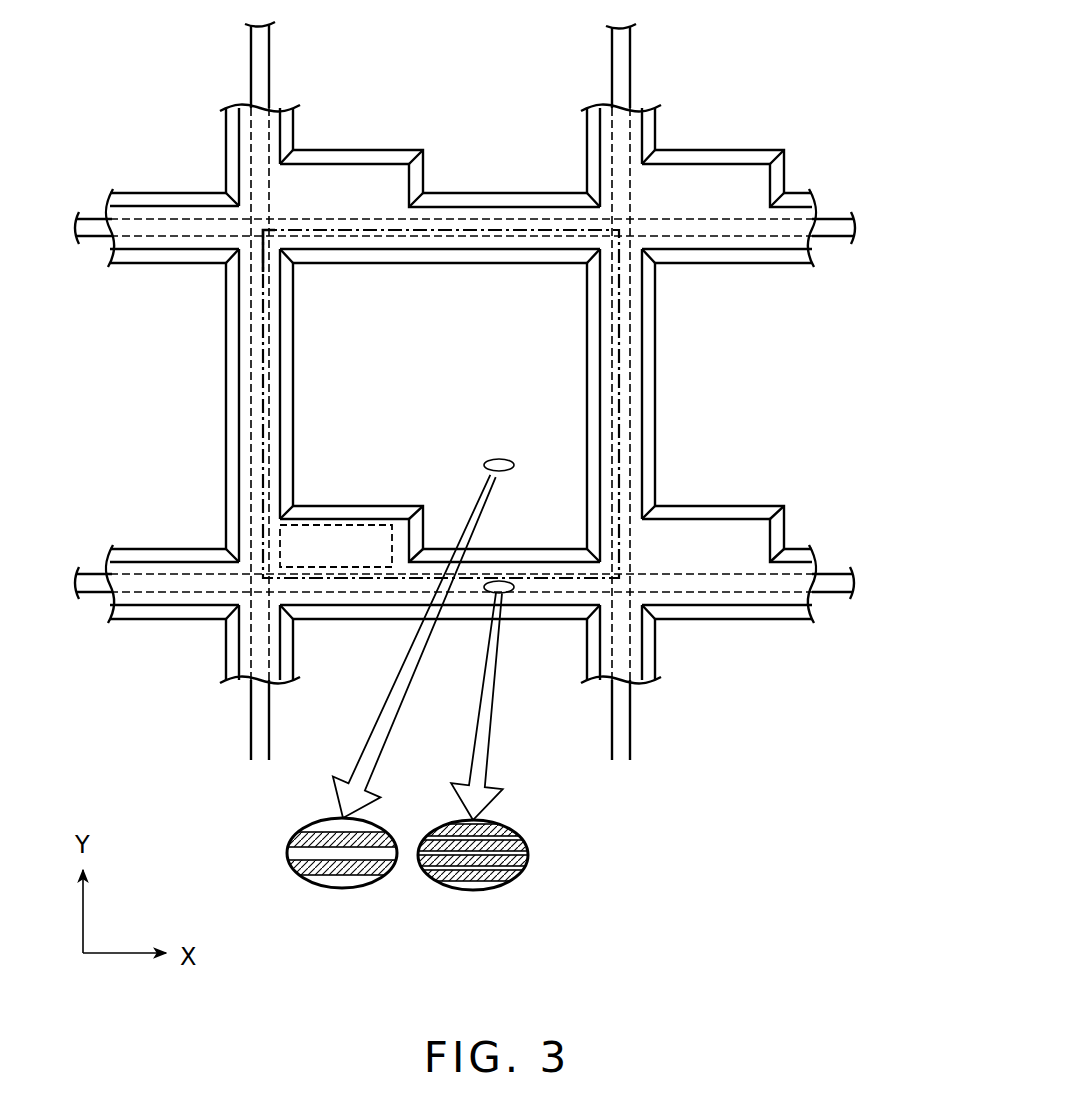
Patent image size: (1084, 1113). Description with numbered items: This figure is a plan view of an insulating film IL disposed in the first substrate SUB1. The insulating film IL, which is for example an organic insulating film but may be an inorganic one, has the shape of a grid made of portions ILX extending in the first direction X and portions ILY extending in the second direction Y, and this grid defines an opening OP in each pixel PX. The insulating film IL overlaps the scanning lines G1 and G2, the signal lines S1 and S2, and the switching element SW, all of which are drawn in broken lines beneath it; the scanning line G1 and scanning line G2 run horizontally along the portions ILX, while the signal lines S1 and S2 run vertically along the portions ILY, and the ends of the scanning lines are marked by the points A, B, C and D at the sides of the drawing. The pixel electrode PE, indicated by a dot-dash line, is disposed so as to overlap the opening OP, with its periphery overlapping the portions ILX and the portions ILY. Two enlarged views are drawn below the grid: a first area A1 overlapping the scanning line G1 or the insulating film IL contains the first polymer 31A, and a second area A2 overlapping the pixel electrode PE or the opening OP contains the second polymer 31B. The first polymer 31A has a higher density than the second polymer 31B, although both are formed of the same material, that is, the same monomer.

The first substrate SUB1 is at (811, 57).
The pixel PX is at (258, 226).
The opening OP is at (488, 294).
The insulating film IL is at (745, 156).
The portion extending in the first direction X ILX is at (773, 257).
The portion extending in the second direction Y ILY is at (225, 657).
The scanning line G1 is at (835, 580).
The scanning line G2 is at (856, 232).
The signal line S1 is at (262, 762).
The signal line S2 is at (621, 762).
The pixel electrode PE is at (620, 383).
The switching element SW is at (356, 524).
The point A is at (212, 456).
The point B is at (663, 458).
The point C is at (66, 582).
The point D is at (862, 585).
The first area A1 is at (483, 766).
The second area A2 is at (397, 705).
The first polymer 31A is at (457, 828).
The second polymer 31B is at (327, 848).